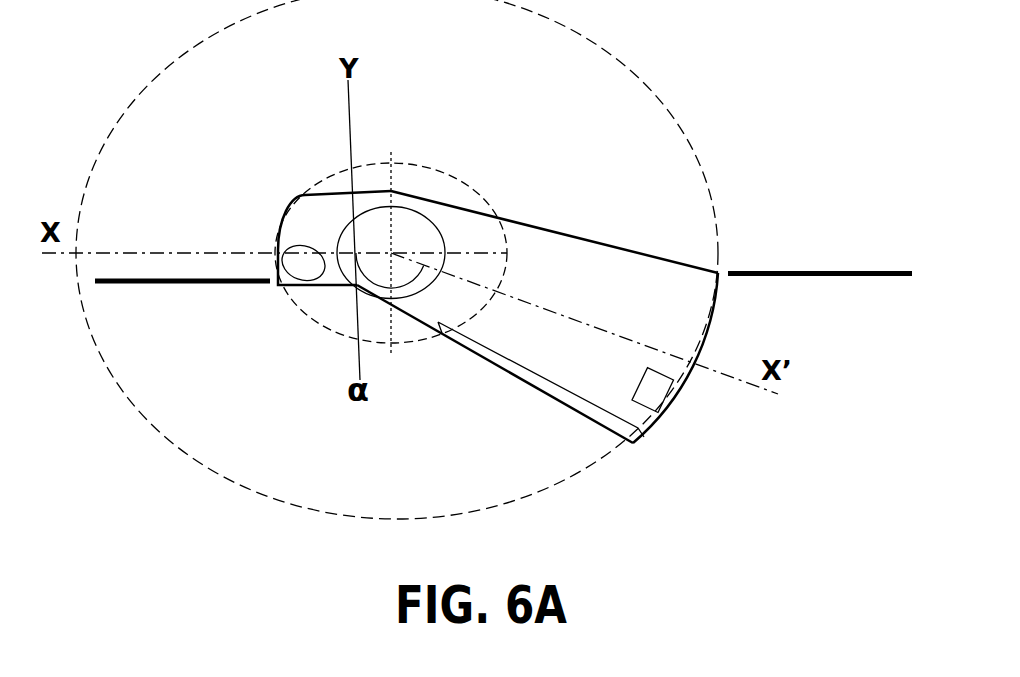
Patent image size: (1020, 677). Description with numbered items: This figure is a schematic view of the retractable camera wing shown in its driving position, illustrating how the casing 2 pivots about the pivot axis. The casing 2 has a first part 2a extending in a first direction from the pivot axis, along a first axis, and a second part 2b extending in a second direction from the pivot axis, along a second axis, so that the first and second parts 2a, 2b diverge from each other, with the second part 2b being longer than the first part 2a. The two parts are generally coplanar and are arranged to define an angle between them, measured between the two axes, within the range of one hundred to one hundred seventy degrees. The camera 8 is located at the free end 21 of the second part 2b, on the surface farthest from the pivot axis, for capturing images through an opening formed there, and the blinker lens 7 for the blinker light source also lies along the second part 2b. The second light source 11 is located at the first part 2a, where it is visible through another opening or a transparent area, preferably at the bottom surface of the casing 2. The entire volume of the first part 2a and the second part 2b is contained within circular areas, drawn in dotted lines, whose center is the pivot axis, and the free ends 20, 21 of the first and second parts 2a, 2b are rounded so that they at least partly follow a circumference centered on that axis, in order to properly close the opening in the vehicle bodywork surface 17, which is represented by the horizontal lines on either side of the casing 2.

The casing 2 is at (494, 234).
The first part of the casing 2a is at (283, 224).
The second part of the casing 2b is at (585, 299).
The free end of the first part 20 is at (281, 232).
The free end of the second part 21 is at (713, 313).
The second light source 11 is at (297, 274).
The blinker lens 7 is at (576, 404).
The camera 8 is at (657, 390).
The bodywork surface 17 is at (833, 277).